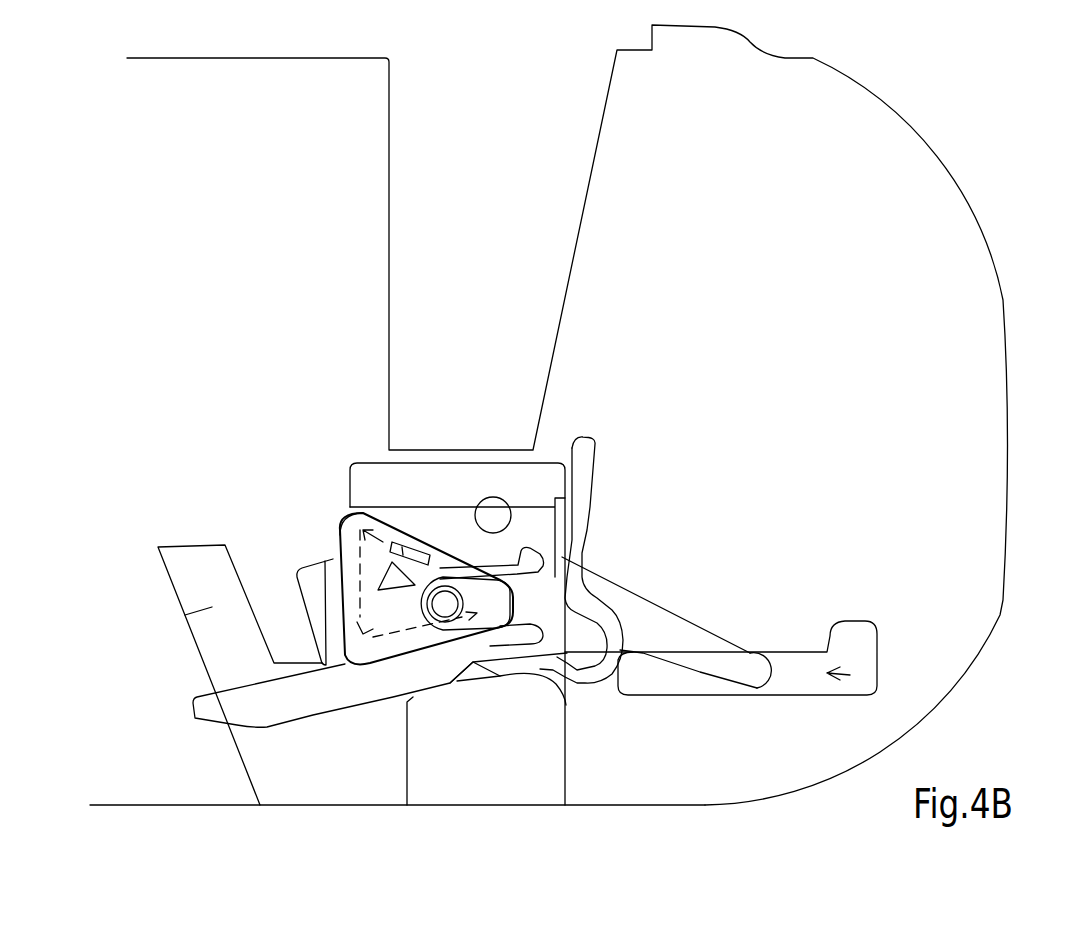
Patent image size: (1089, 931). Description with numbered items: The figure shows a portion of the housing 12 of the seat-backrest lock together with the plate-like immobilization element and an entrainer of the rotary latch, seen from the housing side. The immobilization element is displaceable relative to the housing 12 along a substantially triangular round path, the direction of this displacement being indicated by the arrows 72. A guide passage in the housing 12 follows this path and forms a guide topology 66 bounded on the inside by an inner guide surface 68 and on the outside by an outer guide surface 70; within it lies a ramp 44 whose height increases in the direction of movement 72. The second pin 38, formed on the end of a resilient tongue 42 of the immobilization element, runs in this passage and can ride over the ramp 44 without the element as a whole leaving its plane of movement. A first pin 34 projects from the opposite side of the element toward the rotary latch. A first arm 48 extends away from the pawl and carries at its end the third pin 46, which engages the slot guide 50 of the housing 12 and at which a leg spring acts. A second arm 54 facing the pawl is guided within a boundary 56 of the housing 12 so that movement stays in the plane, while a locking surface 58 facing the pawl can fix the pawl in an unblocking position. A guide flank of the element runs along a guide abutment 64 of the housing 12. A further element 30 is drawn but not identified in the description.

The housing 12 is at (719, 778).
The spring arm 30 is at (577, 492).
The first pin 34 is at (493, 512).
The second pin 38 is at (445, 604).
The resilient tongue 42 is at (465, 588).
The ramp 44 is at (400, 540).
The third pin 46 is at (762, 672).
The first arm 48 is at (693, 640).
The slot guide 50 is at (850, 675).
The second arm 54 is at (207, 710).
The boundary 56 is at (210, 610).
The locking surface 58 is at (310, 610).
The guide abutment 64 is at (483, 683).
The guide topology 66 is at (350, 679).
The inner guide surface 68 is at (345, 552).
The outer guide surface 70 is at (387, 577).
The arrows / direction of movement 72 is at (396, 634).